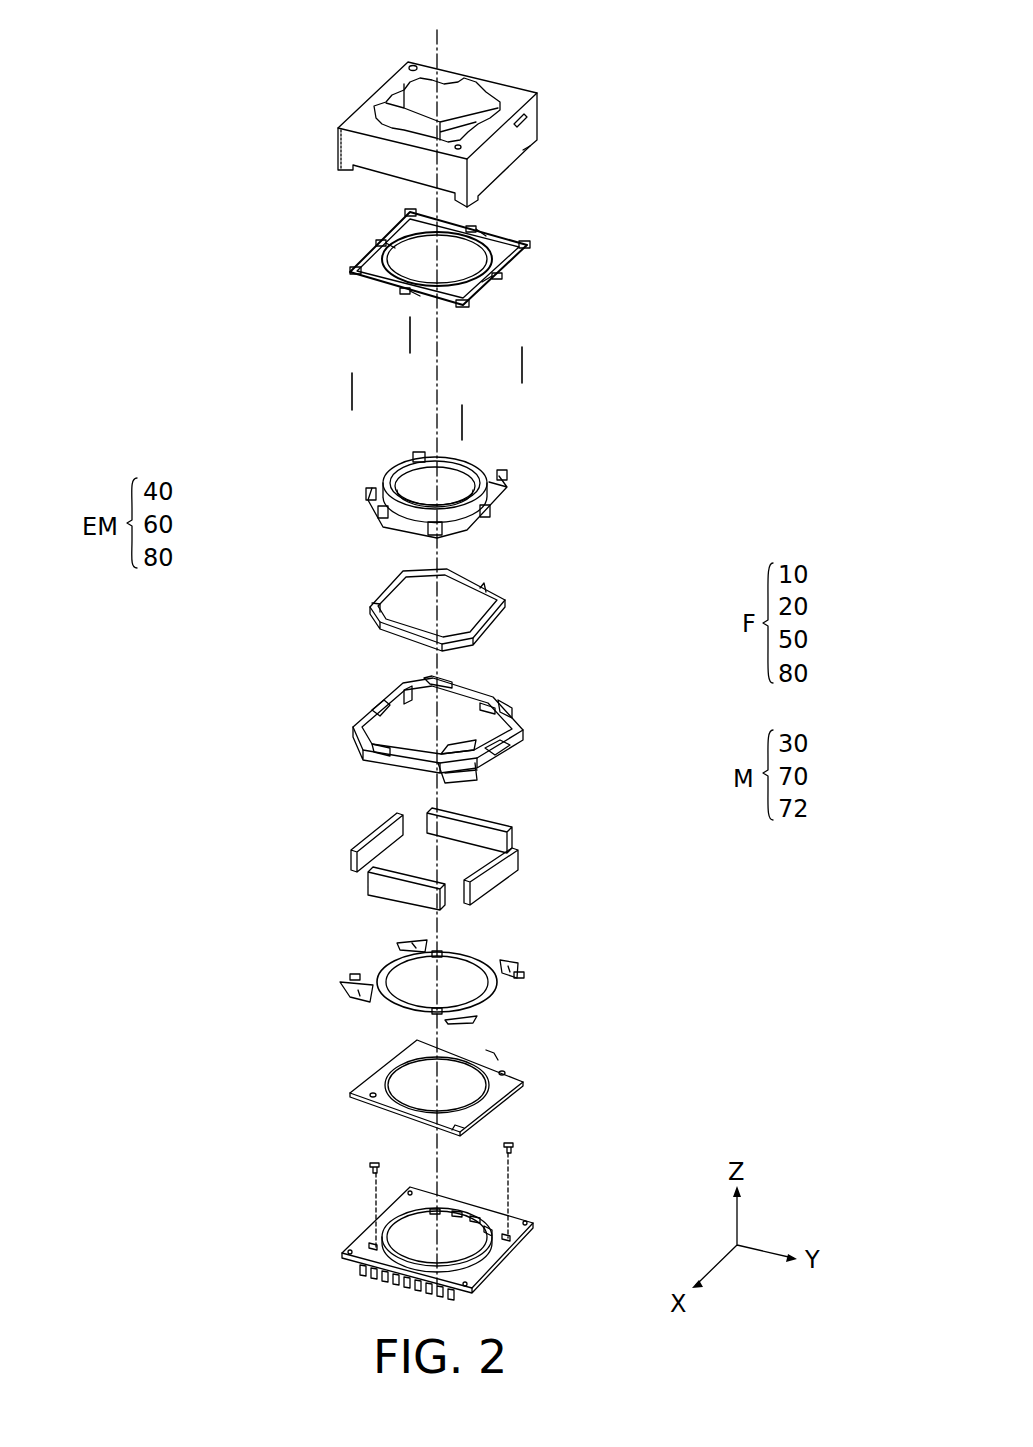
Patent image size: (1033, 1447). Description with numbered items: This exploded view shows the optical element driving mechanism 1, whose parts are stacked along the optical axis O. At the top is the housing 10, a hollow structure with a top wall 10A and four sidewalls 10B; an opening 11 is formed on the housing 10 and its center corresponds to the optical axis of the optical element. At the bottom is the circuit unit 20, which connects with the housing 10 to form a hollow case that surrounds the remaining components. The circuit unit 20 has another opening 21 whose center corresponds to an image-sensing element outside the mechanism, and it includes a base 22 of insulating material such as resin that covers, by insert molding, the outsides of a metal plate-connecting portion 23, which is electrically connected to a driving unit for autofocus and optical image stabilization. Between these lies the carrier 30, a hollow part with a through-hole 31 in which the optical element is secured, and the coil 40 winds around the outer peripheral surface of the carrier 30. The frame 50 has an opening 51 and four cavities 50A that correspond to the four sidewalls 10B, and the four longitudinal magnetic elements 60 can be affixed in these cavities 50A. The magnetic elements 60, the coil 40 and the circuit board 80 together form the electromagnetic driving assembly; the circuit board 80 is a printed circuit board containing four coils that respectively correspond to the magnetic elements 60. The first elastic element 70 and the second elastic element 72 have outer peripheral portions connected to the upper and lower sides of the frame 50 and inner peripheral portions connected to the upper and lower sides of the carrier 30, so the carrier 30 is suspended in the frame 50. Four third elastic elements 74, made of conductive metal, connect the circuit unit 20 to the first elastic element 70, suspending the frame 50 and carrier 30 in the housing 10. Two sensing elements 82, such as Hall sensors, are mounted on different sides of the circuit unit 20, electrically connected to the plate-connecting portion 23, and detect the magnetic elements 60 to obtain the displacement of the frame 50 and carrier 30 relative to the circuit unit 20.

The optical element driving mechanism 1 is at (120, 30).
The housing 10 is at (342, 142).
The top wall 10A is at (365, 118).
The sidewalls 10B is at (512, 143).
The opening 11 is at (452, 125).
The circuit unit 20 is at (342, 1250).
The opening 21 is at (452, 1250).
The base 22 is at (368, 1233).
The plate-connecting portion 23 is at (360, 1268).
The carrier 30 is at (360, 492).
The through-hole 31 is at (420, 500).
The coil 40 is at (371, 604).
The frame 50 is at (353, 737).
The cavities 50A is at (388, 718).
The opening 51 is at (453, 730).
The magnetic elements 60 is at (507, 840).
The first elastic element 70 is at (350, 272).
The second elastic element 72 is at (342, 982).
The third elastic elements 74 is at (350, 376).
The circuit board 80 is at (350, 1092).
The sensing elements 82 is at (371, 1168).